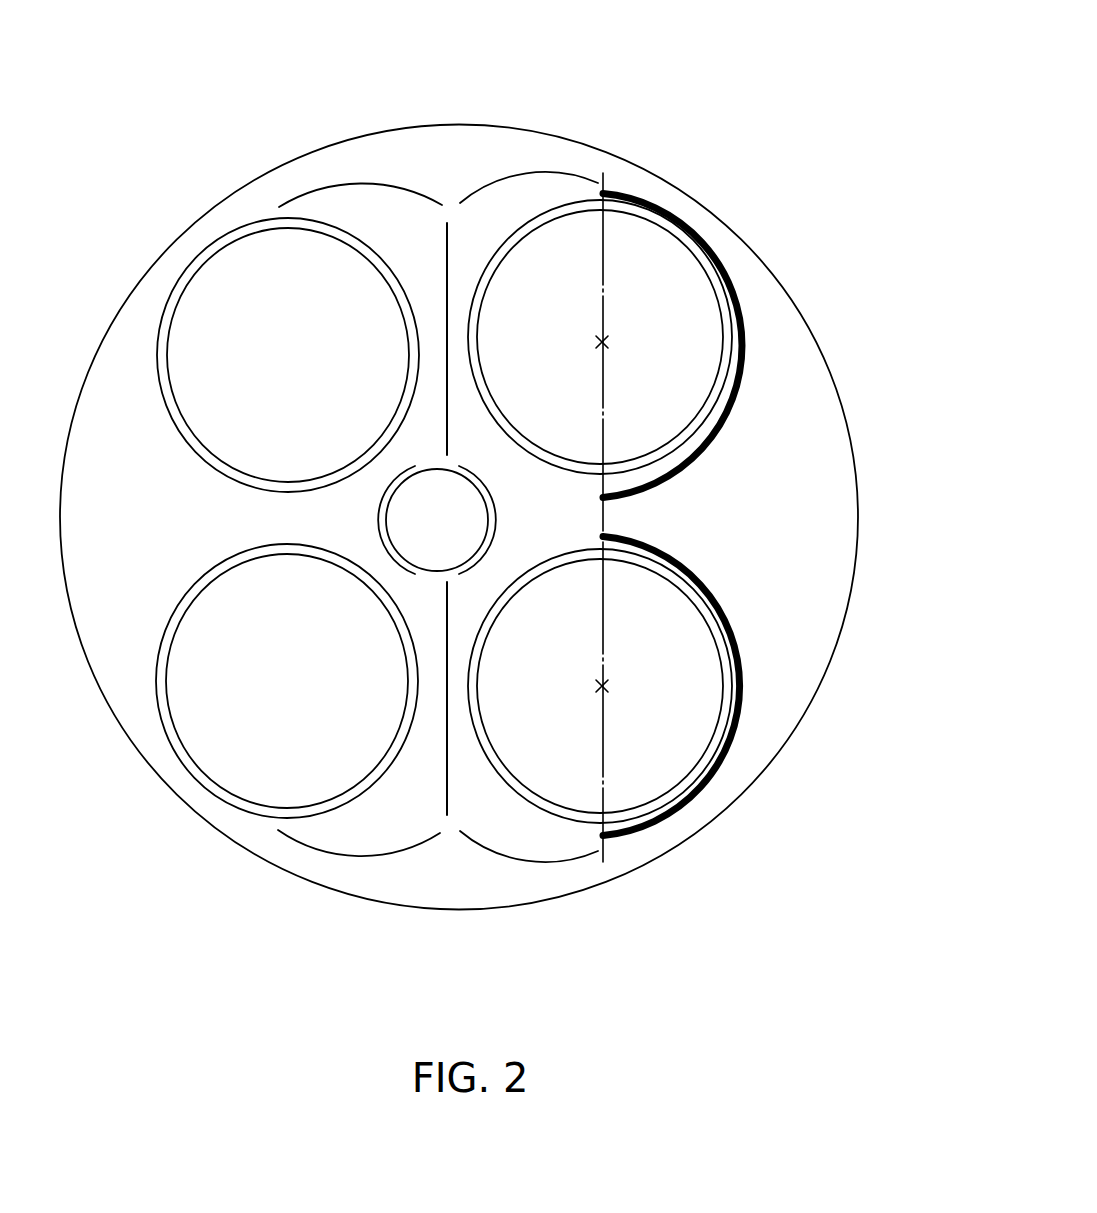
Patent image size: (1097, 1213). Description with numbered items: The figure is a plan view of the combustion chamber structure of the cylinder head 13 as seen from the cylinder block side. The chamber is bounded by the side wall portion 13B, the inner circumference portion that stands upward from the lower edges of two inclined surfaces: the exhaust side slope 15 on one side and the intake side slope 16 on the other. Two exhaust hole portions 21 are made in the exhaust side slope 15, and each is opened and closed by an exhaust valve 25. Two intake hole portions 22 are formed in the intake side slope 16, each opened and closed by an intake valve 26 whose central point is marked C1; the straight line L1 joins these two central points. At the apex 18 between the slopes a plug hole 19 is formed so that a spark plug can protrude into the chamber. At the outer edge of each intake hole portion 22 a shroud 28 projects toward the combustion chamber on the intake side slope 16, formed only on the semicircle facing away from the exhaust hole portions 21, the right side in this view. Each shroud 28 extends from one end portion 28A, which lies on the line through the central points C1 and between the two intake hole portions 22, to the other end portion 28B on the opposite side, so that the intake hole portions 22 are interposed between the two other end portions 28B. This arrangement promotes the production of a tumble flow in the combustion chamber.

The cylinder head 13 is at (709, 92).
The side wall portion 13B is at (858, 555).
The exhaust side slope 15 is at (385, 200).
The intake side slope 16 is at (497, 200).
The apex 18 is at (445, 797).
The plug hole 19 is at (423, 570).
The exhaust hole portion 21 is at (165, 392).
The intake hole portion 22 is at (509, 237).
The exhaust valve 25 is at (218, 432).
The intake valve 26 is at (685, 415).
The shroud 28 is at (735, 413).
The one end portion 28A is at (603, 497).
The other end portion 28B is at (603, 193).
The central point C1 is at (600, 342).
The center line L1 is at (604, 510).